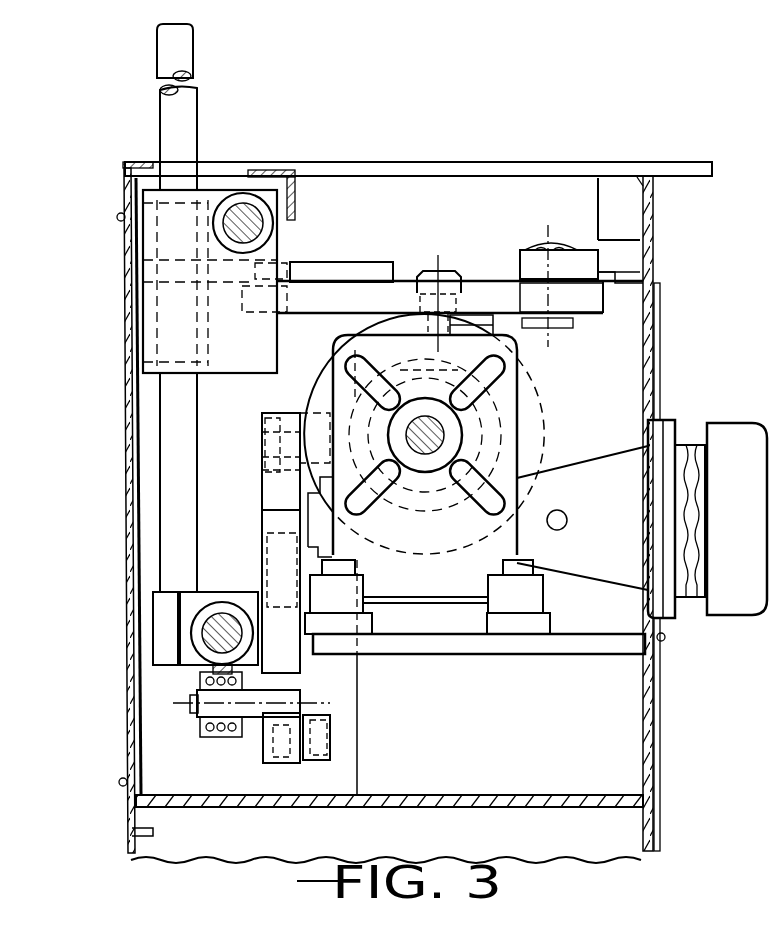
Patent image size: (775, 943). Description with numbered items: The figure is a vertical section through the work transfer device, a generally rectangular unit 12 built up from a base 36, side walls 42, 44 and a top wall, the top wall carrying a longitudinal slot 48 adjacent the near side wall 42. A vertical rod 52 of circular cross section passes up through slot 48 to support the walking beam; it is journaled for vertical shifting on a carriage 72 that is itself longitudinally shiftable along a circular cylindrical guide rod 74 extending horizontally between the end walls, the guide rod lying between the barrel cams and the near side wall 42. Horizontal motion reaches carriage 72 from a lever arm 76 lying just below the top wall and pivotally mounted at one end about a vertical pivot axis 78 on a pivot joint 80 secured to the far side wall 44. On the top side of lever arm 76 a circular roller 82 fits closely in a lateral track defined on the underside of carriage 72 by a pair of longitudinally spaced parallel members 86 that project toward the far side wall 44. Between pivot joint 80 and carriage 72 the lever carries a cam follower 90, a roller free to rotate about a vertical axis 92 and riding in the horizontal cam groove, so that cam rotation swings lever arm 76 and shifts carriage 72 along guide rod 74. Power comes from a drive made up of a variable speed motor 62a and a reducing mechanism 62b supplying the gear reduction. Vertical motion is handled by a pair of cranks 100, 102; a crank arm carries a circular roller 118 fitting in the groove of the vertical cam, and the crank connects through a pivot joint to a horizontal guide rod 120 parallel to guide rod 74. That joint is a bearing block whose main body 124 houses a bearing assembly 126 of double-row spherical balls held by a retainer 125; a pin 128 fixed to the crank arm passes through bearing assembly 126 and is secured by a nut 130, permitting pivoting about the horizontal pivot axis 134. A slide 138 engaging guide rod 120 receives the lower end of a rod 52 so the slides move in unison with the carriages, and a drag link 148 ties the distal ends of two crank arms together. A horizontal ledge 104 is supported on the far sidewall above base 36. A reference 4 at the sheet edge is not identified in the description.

The carriage 72 is at (207, 192).
The longitudinal slot 48 is at (233, 174).
The guide rod 74 is at (253, 213).
The roller 82 is at (288, 270).
The parallel members 86 is at (355, 275).
The cam follower 90 is at (398, 290).
The vertical axis 92 is at (450, 265).
The pivot joint 80 is at (536, 244).
The lever arm 76 is at (501, 281).
The vertical pivot axis 78 is at (565, 222).
The variable speed motor 62a is at (728, 423).
The reducing mechanism 62b is at (520, 428).
The circular roller 118 is at (317, 407).
The vertical rods 52 is at (198, 458).
The crank 100 is at (262, 480).
The crank 102 is at (262, 536).
The slide 138 is at (207, 592).
The guide rod 120 is at (190, 624).
The side wall 42 is at (128, 535).
The retainer 125 is at (200, 676).
The nut 130 is at (197, 718).
The bearing assembly 126 is at (215, 738).
The main body 124 is at (245, 740).
The pin 128 is at (252, 723).
The horizontal pivot axis 134 is at (310, 703).
The drag link 148 is at (330, 740).
The horizontal ledge 104 is at (520, 655).
The side wall 44 is at (653, 737).
The base 36 is at (528, 797).
The housing 4 is at (770, 316).
The unit 12 is at (765, 710).